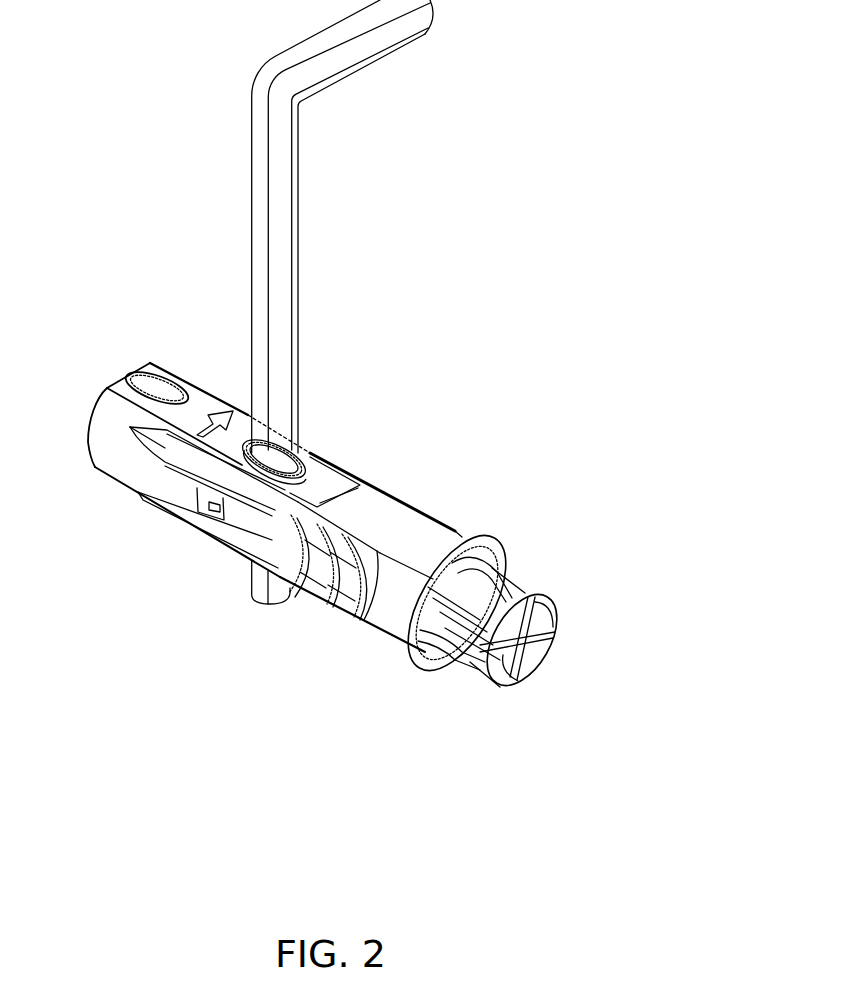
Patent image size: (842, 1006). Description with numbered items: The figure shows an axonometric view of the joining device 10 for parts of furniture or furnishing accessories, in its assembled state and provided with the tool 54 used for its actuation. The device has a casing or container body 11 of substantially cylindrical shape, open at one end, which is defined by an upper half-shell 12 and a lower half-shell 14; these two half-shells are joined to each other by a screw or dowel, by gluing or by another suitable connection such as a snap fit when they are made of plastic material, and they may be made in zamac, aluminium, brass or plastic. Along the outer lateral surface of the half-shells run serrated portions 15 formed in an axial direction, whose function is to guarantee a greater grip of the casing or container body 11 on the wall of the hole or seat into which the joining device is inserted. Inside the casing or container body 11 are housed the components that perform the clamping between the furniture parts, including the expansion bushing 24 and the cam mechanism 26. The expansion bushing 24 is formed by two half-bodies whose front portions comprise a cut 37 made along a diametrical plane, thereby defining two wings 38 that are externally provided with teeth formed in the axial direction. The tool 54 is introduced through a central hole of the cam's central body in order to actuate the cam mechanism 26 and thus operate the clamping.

The joining device 10 is at (569, 157).
The casing or container body 11 is at (119, 343).
The upper half-shell 12 is at (431, 512).
The lower half-shell 14 is at (385, 628).
The serrated portions 15 is at (330, 565).
The expansion bushing 24 is at (551, 599).
The cam mechanism 26 is at (326, 454).
The cut 37 is at (545, 638).
The wings 38 is at (520, 672).
The tool 54 is at (323, 65).